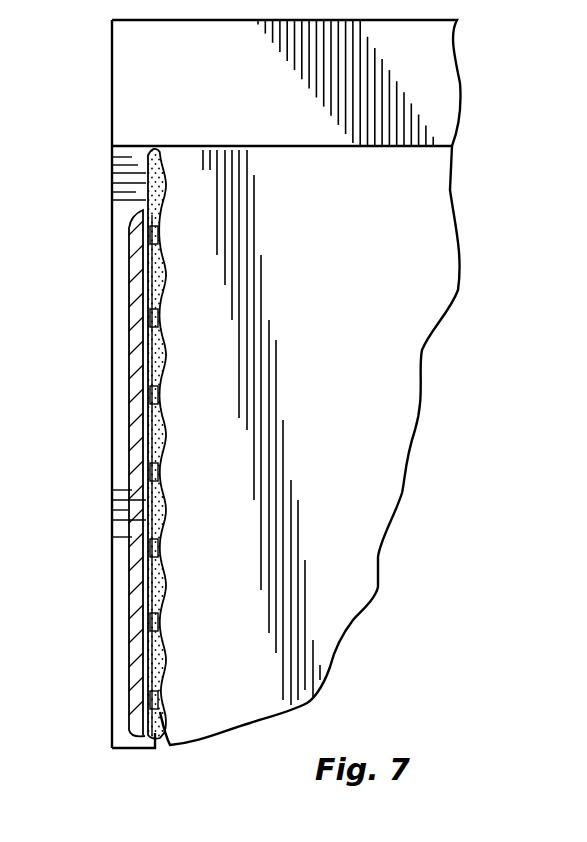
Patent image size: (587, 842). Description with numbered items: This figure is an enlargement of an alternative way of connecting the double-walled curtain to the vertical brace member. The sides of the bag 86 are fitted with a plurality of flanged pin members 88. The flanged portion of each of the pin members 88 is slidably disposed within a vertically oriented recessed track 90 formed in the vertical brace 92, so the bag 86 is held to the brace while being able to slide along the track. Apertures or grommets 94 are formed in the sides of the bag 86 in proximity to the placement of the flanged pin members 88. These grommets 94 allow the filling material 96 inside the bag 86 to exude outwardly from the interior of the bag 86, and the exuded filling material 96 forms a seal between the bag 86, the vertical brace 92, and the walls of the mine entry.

The bag 86 is at (426, 292).
The flanged pin members 88 is at (143, 483).
The recessed track 90 is at (145, 292).
The vertical brace 92 is at (120, 212).
The grommets 94 is at (167, 355).
The filling material 96 is at (167, 458).